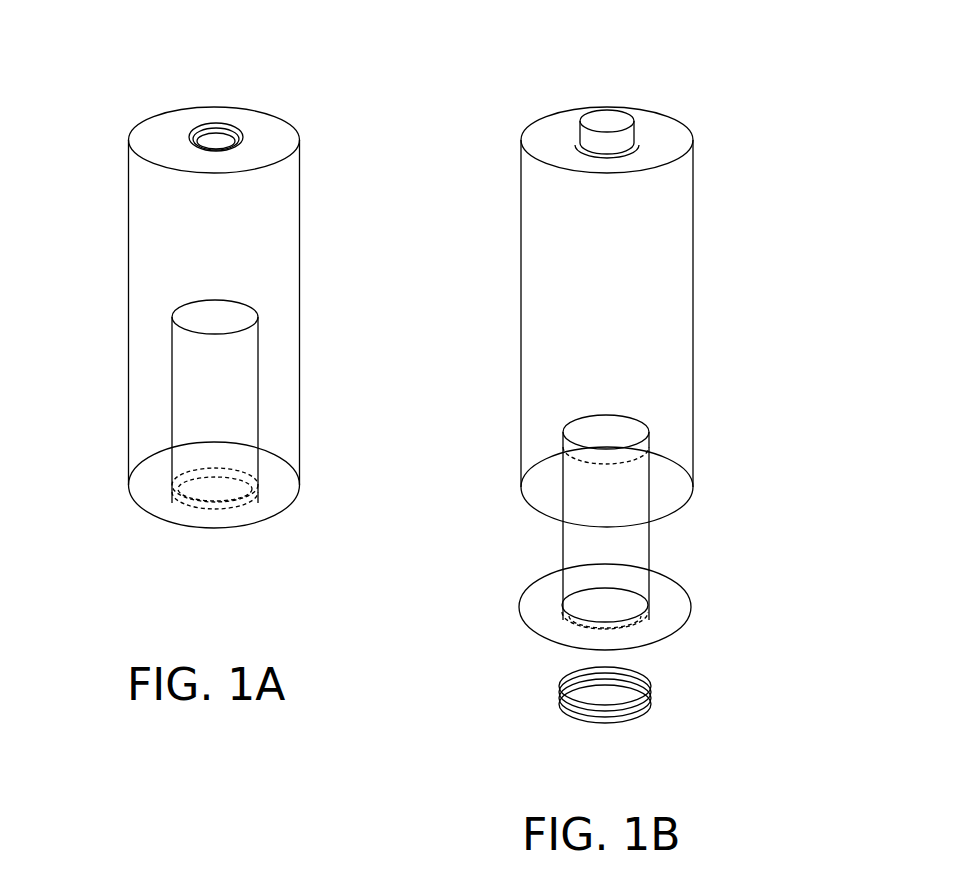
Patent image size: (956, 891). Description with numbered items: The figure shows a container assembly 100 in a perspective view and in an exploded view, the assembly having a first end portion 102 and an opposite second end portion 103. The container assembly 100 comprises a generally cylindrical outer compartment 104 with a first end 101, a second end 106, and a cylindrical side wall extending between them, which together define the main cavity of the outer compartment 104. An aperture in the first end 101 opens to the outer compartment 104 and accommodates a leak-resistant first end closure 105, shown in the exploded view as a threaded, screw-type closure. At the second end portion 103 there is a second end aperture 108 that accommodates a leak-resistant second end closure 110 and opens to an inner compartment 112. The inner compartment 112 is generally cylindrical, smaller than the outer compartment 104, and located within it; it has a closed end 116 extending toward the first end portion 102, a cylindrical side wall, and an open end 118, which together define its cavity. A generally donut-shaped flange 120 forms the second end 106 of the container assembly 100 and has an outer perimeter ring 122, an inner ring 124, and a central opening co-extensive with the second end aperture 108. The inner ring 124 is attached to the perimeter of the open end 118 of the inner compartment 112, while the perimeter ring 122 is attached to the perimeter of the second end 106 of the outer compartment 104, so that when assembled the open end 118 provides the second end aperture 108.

In FIG. 1A, the container assembly 100 is at (68, 72).
In FIG. 1A, the first end 101 is at (165, 138).
In FIG. 1B, the first end 101 is at (556, 135).
In FIG. 1A, the first end portion 102 is at (316, 113).
In FIG. 1A, the second end portion 103 is at (102, 475).
In FIG. 1B, the second end portion 103 is at (710, 447).
In FIG. 1A, the outer compartment 104 is at (300, 258).
In FIG. 1B, the outer compartment 104 is at (693, 277).
In FIG. 1B, the first end closure 105 is at (628, 125).
In FIG. 1A, the second end 106 is at (153, 493).
In FIG. 1B, the second end aperture 108 is at (602, 612).
In FIG. 1B, the second end closure 110 is at (647, 716).
In FIG. 1A, the inner compartment 112 is at (257, 388).
In FIG. 1B, the inner compartment 112 is at (650, 557).
In FIG. 1B, the closed end 116 is at (635, 405).
In FIG. 1B, the open end 118 is at (553, 602).
In FIG. 1B, the flange 120 is at (670, 612).
In FIG. 1B, the perimeter ring 122 is at (650, 640).
In FIG. 1B, the inner ring 124 is at (580, 590).